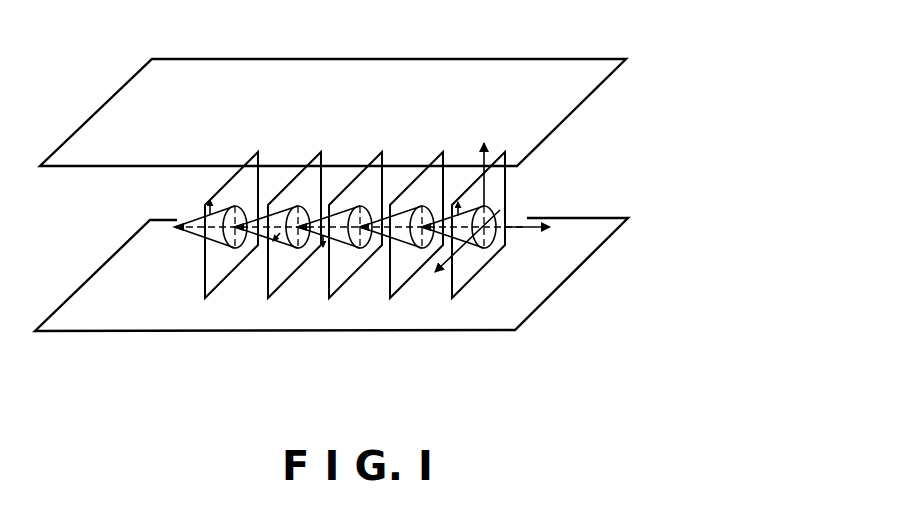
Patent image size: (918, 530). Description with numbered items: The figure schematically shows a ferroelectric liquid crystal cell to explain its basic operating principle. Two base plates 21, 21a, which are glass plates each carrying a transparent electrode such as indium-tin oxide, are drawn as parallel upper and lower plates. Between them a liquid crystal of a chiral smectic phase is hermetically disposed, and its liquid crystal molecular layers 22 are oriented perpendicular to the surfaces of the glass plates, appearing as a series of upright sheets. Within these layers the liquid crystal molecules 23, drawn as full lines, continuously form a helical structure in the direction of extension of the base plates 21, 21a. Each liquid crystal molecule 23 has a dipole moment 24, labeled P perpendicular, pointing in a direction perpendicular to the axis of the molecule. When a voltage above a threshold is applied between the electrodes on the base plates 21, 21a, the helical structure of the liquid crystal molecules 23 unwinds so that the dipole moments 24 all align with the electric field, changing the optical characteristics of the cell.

The base plate 21 is at (548, 66).
The base plate 21a is at (593, 238).
The liquid crystal molecular layers 22 is at (498, 188).
The liquid crystal molecules 23 is at (196, 229).
The dipole moment (P⊥) 24 is at (208, 206).